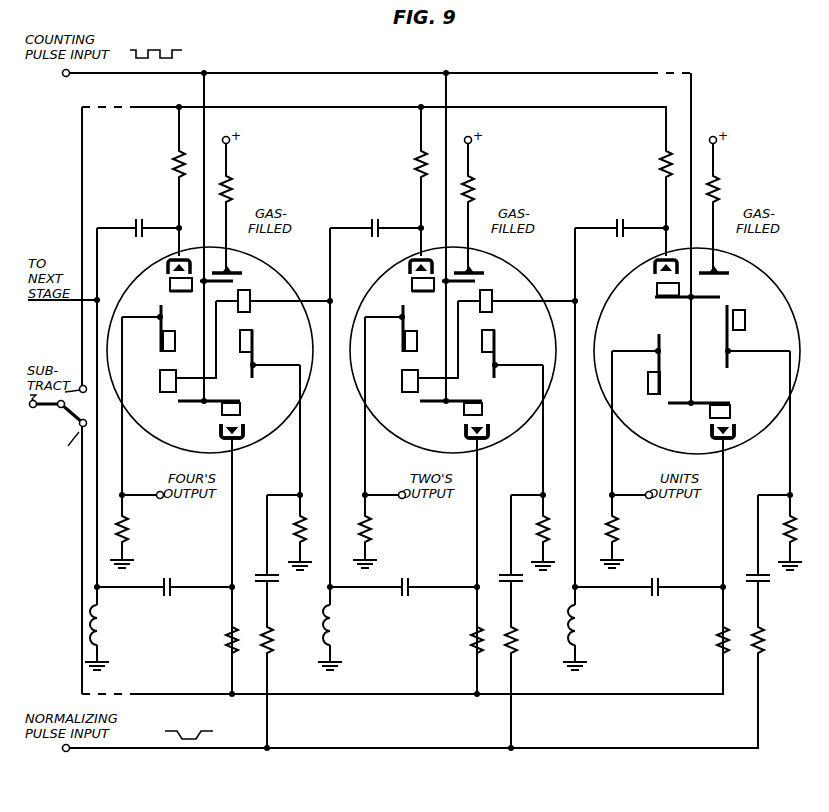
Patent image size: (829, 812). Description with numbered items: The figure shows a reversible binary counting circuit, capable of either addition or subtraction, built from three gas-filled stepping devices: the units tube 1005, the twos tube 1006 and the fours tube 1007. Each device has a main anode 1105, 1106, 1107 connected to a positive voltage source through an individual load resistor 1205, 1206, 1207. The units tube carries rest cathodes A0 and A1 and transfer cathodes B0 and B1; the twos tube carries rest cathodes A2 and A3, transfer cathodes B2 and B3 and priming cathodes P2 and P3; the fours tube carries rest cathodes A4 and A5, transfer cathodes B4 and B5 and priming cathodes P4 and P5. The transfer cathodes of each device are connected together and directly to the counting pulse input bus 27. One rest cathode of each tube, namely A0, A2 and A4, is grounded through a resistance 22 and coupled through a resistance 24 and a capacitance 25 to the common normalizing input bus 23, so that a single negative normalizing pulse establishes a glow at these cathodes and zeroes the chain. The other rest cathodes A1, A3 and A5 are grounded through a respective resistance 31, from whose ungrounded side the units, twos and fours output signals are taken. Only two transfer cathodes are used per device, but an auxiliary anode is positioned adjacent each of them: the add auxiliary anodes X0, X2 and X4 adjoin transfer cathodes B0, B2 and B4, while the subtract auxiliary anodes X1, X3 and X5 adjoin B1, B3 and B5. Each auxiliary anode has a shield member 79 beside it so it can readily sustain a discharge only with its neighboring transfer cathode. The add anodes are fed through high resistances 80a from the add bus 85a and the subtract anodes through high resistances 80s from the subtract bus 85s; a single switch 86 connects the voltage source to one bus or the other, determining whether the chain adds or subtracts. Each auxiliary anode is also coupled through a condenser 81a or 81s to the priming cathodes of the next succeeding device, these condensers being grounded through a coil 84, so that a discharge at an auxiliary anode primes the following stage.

The counting pulse input bus 27 is at (345, 73).
The subtract bus 85s is at (538, 107).
The high resistance 80s is at (172, 168).
The condenser 81s is at (139, 216).
The load resistor 1207 is at (234, 189).
The load resistor 1206 is at (477, 189).
The load resistor 1205 is at (722, 189).
The anode 1107 is at (238, 271).
The anode 1106 is at (480, 271).
The anode 1105 is at (724, 271).
The fours tube 1007 is at (268, 283).
The twos tube 1006 is at (511, 283).
The units tube 1005 is at (760, 283).
The shield member 79 is at (165, 263).
The subtract auxiliary anode X5 is at (168, 286).
The transfer cathode B5 is at (193, 291).
The rest cathode A5 is at (161, 336).
The priming cathode P4 is at (162, 392).
The priming cathode P5 is at (249, 312).
The rest cathode A4 is at (255, 354).
The transfer cathode B4 is at (242, 405).
The add auxiliary anode X4 is at (243, 428).
The subtract auxiliary anode X3 is at (410, 286).
The transfer cathode B3 is at (435, 291).
The rest cathode A3 is at (403, 336).
The priming cathode P2 is at (404, 392).
The priming cathode P3 is at (492, 312).
The rest cathode A2 is at (497, 354).
The transfer cathode B2 is at (484, 405).
The add auxiliary anode X2 is at (488, 428).
The subtract auxiliary anode X1 is at (655, 287).
The transfer cathode B1 is at (658, 294).
The rest cathode A1 is at (650, 388).
The rest cathode A0 is at (746, 322).
The transfer cathode B0 is at (730, 407).
The add auxiliary anode X0 is at (734, 428).
The switch 86 is at (62, 418).
The resistance 31 is at (136, 531).
The resistance 22 is at (292, 522).
The condenser 81a is at (171, 596).
The capacitance 25 is at (276, 583).
The coil 84 is at (108, 628).
The high resistance 80a is at (225, 639).
The resistance 24 is at (273, 645).
The add bus 85a is at (373, 695).
The normalizing input bus 23 is at (393, 749).